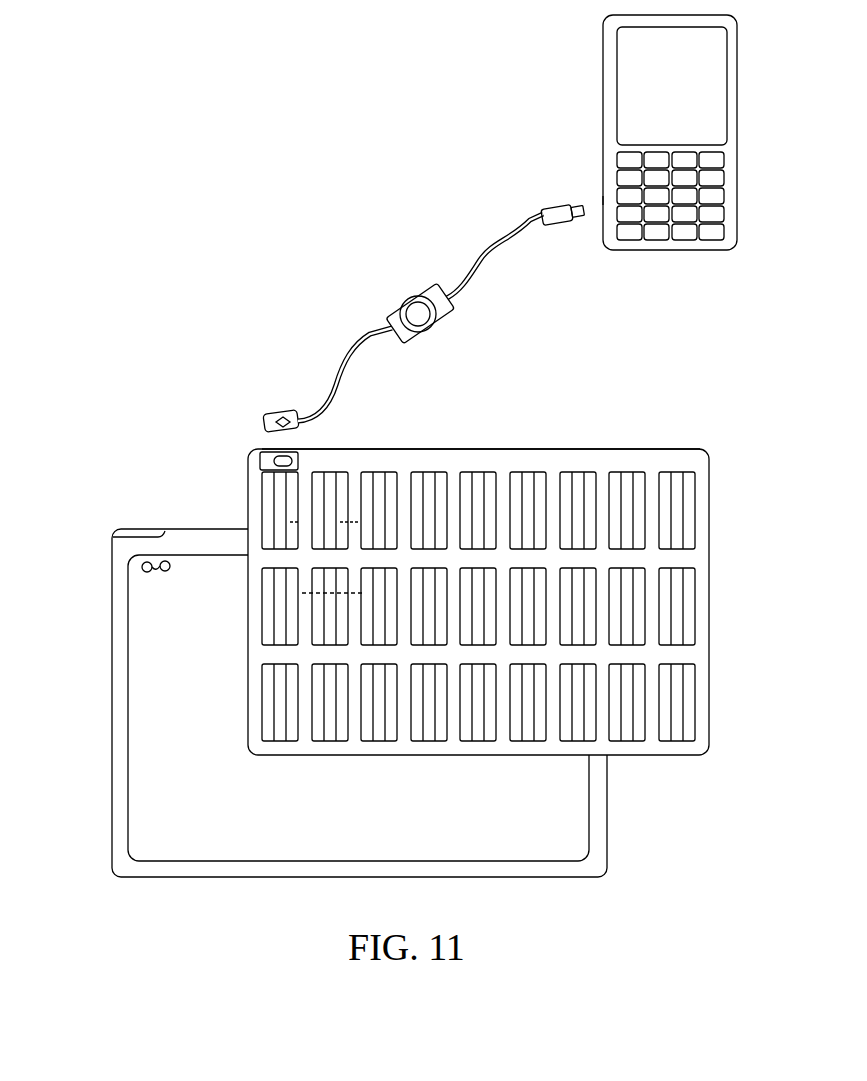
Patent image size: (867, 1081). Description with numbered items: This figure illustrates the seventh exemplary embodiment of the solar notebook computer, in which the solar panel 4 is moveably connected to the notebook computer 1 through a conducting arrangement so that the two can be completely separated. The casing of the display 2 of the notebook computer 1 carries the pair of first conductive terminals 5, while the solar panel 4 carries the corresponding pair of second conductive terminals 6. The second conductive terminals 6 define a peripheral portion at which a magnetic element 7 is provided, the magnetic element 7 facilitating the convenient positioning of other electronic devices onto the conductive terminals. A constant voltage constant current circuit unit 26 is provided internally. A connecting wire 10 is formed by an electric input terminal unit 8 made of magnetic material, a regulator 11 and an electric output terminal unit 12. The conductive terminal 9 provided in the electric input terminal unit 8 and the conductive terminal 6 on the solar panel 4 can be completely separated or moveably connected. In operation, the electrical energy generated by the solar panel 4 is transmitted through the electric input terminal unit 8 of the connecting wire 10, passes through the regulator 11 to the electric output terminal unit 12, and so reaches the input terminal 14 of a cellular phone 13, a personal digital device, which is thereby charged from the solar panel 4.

The notebook computer 1 is at (97, 578).
The display 2 is at (562, 840).
The solar panel 4 is at (661, 444).
The first conductive terminals 5 is at (137, 546).
The second conductive terminals 6 is at (251, 451).
The magnetic element 7 is at (314, 451).
The electric input terminal unit 8 is at (262, 400).
The conductive terminal 9 is at (249, 411).
The connecting wire 10 is at (545, 359).
The regulator 11 is at (398, 289).
The electric output terminal unit 12 is at (536, 195).
The cellular phone 13 is at (662, 268).
The input terminal 14 is at (587, 191).
The constant voltage constant current circuit unit 26 is at (325, 594).